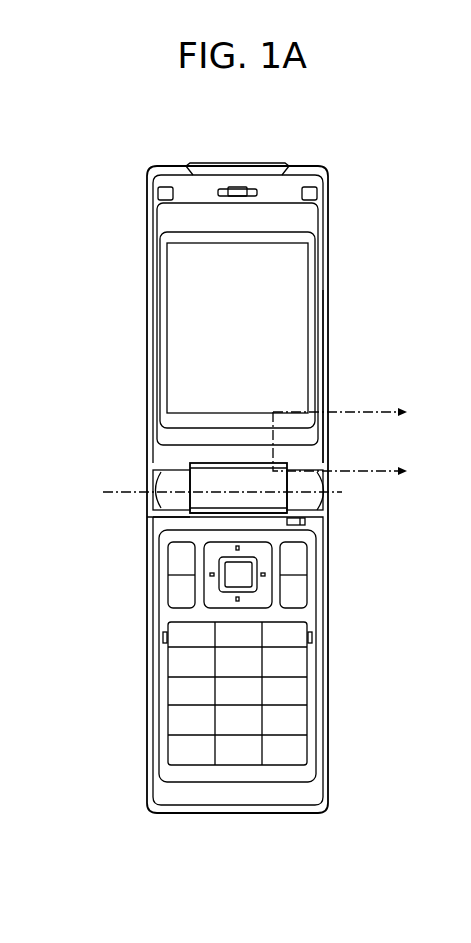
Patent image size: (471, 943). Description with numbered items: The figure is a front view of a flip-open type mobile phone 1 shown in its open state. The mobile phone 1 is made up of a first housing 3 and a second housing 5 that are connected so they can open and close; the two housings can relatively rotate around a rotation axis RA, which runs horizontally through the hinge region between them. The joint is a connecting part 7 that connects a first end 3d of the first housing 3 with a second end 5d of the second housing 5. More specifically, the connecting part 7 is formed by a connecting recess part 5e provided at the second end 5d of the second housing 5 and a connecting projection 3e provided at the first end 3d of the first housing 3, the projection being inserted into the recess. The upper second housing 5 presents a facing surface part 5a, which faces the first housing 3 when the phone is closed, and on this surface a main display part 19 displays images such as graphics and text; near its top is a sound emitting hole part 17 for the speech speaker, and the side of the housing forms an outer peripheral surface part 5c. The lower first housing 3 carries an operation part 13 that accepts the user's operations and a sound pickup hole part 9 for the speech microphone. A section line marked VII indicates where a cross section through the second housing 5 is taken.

The mobile phone 1 is at (250, 105).
The first housing 3 is at (323, 673).
The first end 3d is at (160, 520).
The connecting projection 3e is at (211, 497).
The second housing 5 is at (325, 365).
The facing surface part 5a is at (310, 457).
The outer peripheral surface part 5c is at (330, 328).
The second end 5d is at (173, 482).
The connecting recess part 5e is at (199, 485).
The connecting part 7 is at (352, 492).
The sound pickup hole part 9 is at (306, 525).
The operation part 13 is at (293, 695).
The sound emitting hole part 17 is at (237, 188).
The main display part 19 is at (290, 291).
The rotation axis RA is at (125, 495).
The section line VII- VII is at (359, 443).